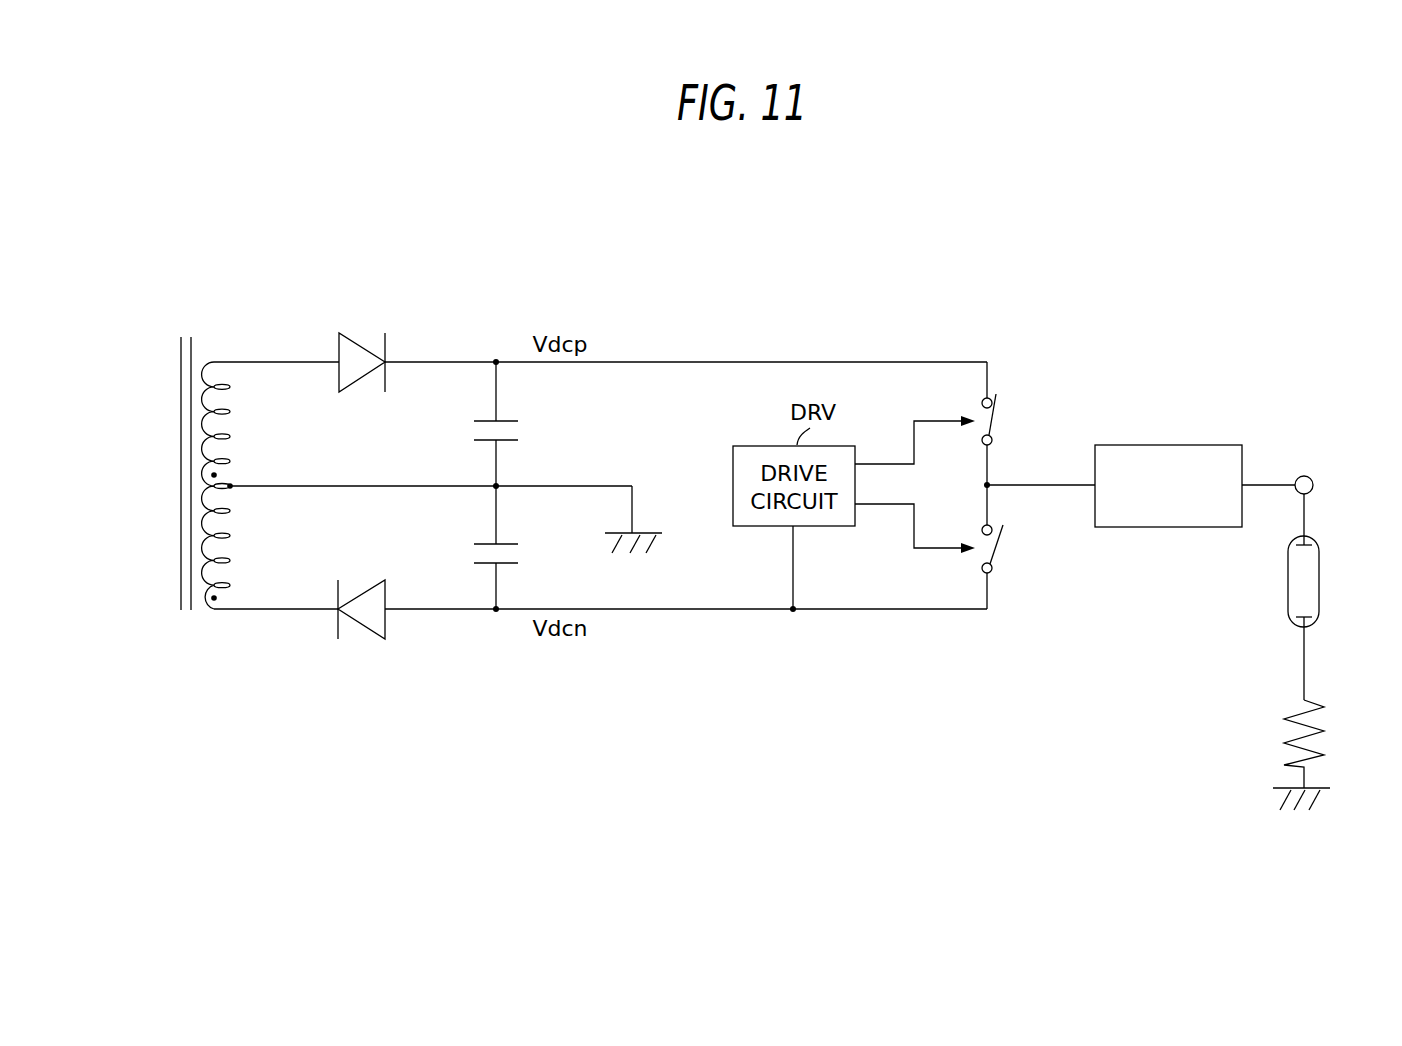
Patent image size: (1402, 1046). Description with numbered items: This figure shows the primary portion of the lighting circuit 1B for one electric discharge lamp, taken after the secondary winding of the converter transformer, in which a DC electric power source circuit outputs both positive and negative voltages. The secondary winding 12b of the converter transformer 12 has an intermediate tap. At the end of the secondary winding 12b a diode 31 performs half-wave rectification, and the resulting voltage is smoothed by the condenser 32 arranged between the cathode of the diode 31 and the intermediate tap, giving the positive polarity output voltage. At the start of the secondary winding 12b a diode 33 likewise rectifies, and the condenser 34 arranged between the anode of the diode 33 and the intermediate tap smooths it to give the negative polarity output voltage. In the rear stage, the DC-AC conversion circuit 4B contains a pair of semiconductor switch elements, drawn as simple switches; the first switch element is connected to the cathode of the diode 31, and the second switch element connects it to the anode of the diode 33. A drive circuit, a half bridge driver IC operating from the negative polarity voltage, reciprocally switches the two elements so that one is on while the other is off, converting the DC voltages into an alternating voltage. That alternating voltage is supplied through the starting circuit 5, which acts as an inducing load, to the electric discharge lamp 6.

The lighting circuit 1B is at (1015, 322).
The DC-AC conversion circuit 4B is at (1013, 650).
The starting circuit 5 is at (1167, 444).
The electric discharge lamp 6 is at (1288, 583).
The converter transformer 12 is at (183, 647).
The secondary winding 12b is at (212, 362).
The diode 31 is at (350, 338).
The condenser 32 is at (505, 420).
The diode 33 is at (375, 582).
The condenser 34 is at (505, 543).